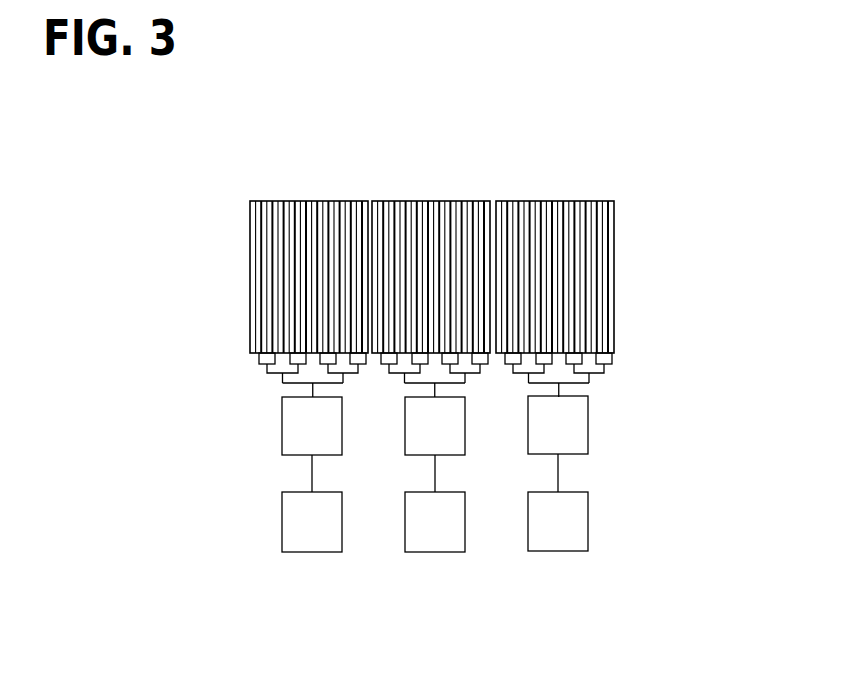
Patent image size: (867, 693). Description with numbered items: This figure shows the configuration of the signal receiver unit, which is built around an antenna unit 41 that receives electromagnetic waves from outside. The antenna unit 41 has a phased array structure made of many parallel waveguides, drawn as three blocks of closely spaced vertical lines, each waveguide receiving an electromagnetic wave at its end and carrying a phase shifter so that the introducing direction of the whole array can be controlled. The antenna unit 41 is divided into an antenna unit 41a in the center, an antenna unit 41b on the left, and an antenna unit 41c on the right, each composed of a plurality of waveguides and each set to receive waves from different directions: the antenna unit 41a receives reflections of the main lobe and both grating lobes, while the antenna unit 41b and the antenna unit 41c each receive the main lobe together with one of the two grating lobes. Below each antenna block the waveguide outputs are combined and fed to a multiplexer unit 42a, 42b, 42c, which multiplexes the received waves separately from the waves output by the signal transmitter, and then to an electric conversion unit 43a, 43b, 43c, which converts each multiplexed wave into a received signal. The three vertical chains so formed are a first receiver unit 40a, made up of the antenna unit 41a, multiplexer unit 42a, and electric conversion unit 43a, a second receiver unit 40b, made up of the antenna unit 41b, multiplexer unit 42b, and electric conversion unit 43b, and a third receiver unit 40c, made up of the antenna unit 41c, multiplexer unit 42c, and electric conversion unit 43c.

The first receiver unit 40a is at (395, 202).
The second receiver unit 40b is at (250, 271).
The third receiver unit 40c is at (616, 268).
The antenna unit 41 is at (525, 87).
The antenna unit 41a is at (437, 201).
The antenna unit 41b is at (332, 201).
The antenna unit 41c is at (525, 201).
The multiplexer unit 42a is at (405, 447).
The multiplexer unit 42b is at (282, 426).
The multiplexer unit 42c is at (588, 425).
The electric conversion unit 43a is at (465, 535).
The electric conversion unit 43b is at (282, 523).
The electric conversion unit 43c is at (588, 520).